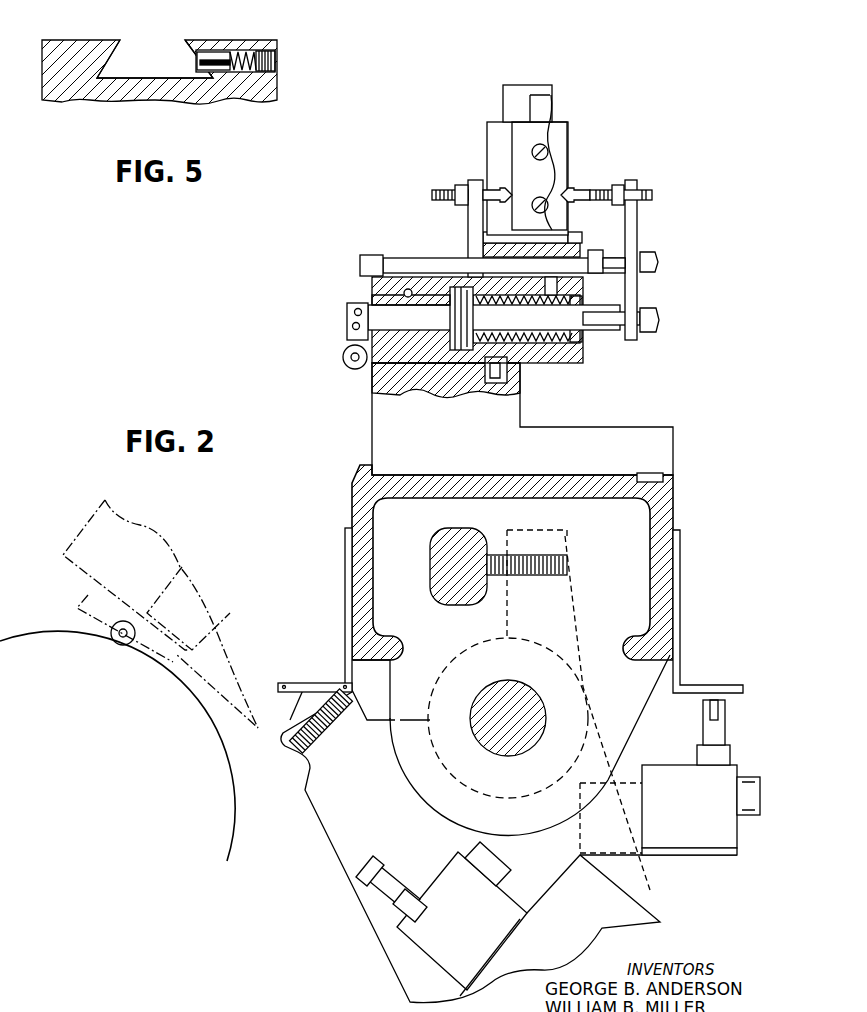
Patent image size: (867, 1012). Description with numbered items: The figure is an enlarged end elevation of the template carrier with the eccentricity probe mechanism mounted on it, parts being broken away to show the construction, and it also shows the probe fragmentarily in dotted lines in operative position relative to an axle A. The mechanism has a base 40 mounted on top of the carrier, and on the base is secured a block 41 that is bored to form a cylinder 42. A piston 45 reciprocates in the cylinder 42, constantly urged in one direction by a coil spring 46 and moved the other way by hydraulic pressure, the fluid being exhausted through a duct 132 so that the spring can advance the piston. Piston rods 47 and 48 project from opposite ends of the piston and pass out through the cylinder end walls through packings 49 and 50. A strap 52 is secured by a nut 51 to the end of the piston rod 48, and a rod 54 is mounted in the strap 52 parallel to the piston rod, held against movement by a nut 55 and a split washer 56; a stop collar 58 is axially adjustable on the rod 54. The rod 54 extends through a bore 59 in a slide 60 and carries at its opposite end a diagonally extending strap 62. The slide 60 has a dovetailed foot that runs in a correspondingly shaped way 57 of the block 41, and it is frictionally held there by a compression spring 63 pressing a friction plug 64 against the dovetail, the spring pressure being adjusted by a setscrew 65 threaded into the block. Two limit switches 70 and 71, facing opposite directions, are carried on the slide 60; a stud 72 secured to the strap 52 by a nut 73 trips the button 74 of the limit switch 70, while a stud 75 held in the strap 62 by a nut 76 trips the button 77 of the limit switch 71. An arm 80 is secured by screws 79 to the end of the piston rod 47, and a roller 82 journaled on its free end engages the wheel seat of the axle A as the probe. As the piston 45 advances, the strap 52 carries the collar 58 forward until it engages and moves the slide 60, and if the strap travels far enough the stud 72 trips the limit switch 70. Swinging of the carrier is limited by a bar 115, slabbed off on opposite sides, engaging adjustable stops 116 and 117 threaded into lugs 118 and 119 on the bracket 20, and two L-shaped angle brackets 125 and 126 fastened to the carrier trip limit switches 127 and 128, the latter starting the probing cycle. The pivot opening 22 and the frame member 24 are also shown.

In FIG. 2, the bracket 20 is at (325, 823).
In FIG. 2, the pivot hole 22 is at (528, 688).
In FIG. 2, the bracket frame 24 is at (673, 518).
In FIG. 2, the base 40 is at (538, 437).
In FIG. 5, the block 41 is at (104, 98).
In FIG. 2, the block 41 is at (588, 355).
In FIG. 2, the cylinder 42 is at (522, 364).
In FIG. 2, the piston 45 is at (455, 285).
In FIG. 2, the coil spring 46 is at (560, 348).
In FIG. 2, the piston rod 47 is at (494, 317).
In FIG. 2, the piston rod 48 is at (618, 328).
In FIG. 2, the packing 49 is at (372, 300).
In FIG. 2, the packing 50 is at (582, 328).
In FIG. 2, the nut 51 is at (652, 332).
In FIG. 2, the strap 52 is at (637, 292).
In FIG. 2, the rod 54 is at (612, 255).
In FIG. 2, the nut 55 is at (659, 262).
In FIG. 2, the split washer 56 is at (604, 270).
In FIG. 5, the way 57 is at (168, 60).
In FIG. 2, the stop collar 58 is at (570, 258).
In FIG. 2, the bore 59 is at (572, 243).
In FIG. 2, the slide 60 is at (483, 238).
In FIG. 2, the strap 62 is at (468, 217).
In FIG. 5, the compression spring 63 is at (246, 58).
In FIG. 5, the friction plug 64 is at (216, 58).
In FIG. 5, the setscrew 65 is at (276, 60).
In FIG. 2, the limit switch 70 is at (487, 128).
In FIG. 2, the limit switch 71 is at (539, 176).
In FIG. 2, the stud 72 is at (604, 190).
In FIG. 2, the nut 73 is at (620, 185).
In FIG. 2, the button 74 is at (578, 188).
In FIG. 2, the stud 75 is at (438, 190).
In FIG. 2, the nut 76 is at (461, 185).
In FIG. 2, the button 77 is at (497, 188).
In FIG. 2, the screws 79 is at (347, 313).
In FIG. 2, the arm 80 is at (348, 330).
In FIG. 2, the roller 82 is at (344, 365).
In FIG. 2, the bar 115 is at (487, 545).
In FIG. 2, the adjustable stop 116 is at (567, 545).
In FIG. 2, the adjustable stop 117 is at (300, 748).
In FIG. 2, the lug 118 is at (555, 604).
In FIG. 2, the lug 119 is at (280, 702).
In FIG. 2, the L-shaped angle bracket 125 is at (680, 600).
In FIG. 2, the L-shaped angle bracket 126 is at (345, 628).
In FIG. 2, the limit switch 127 is at (697, 723).
In FIG. 2, the limit switch 128 is at (368, 880).
In FIG. 2, the duct 132 is at (408, 288).
In FIG. 2, the axle A is at (66, 635).